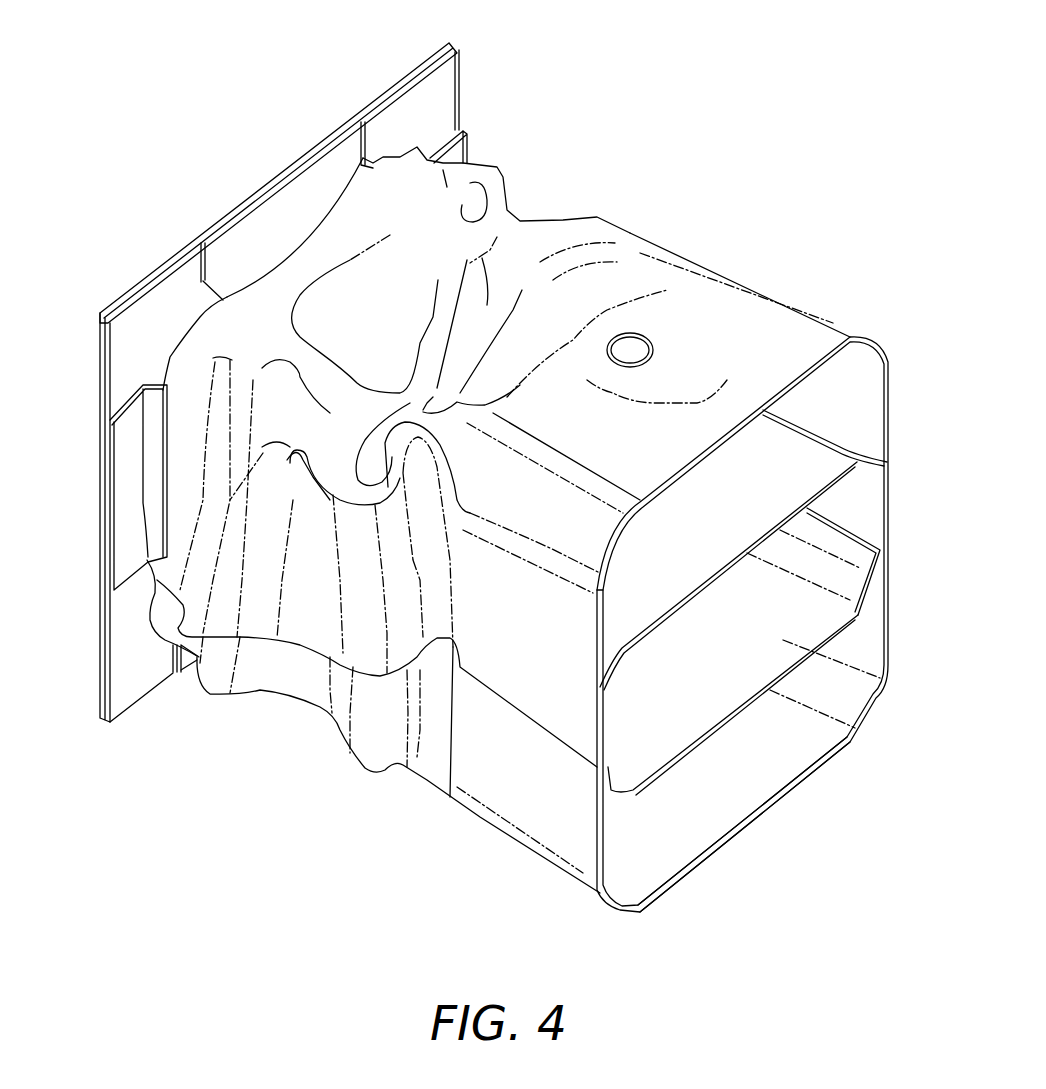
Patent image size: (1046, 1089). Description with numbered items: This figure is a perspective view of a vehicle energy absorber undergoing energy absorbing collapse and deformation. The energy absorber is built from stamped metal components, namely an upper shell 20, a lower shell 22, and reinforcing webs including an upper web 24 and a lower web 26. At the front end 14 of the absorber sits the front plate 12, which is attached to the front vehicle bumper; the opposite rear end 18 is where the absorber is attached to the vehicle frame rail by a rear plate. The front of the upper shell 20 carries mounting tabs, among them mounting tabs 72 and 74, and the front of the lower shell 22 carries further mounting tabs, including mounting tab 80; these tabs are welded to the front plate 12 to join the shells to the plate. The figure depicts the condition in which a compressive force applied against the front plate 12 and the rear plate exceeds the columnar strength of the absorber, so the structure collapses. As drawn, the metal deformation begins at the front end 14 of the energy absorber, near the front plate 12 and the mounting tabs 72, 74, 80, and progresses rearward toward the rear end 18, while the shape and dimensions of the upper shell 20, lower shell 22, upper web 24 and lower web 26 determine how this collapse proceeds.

The front plate 12 is at (147, 297).
The mounting tab 72 is at (280, 203).
The front end 14 is at (445, 183).
The upper shell 20 is at (725, 323).
The rear end 18 is at (782, 363).
The upper web 24 is at (793, 487).
The lower web 26 is at (810, 623).
The lower shell 22 is at (770, 787).
The mounting tab 74 is at (127, 453).
The mounting tab 80 is at (127, 619).